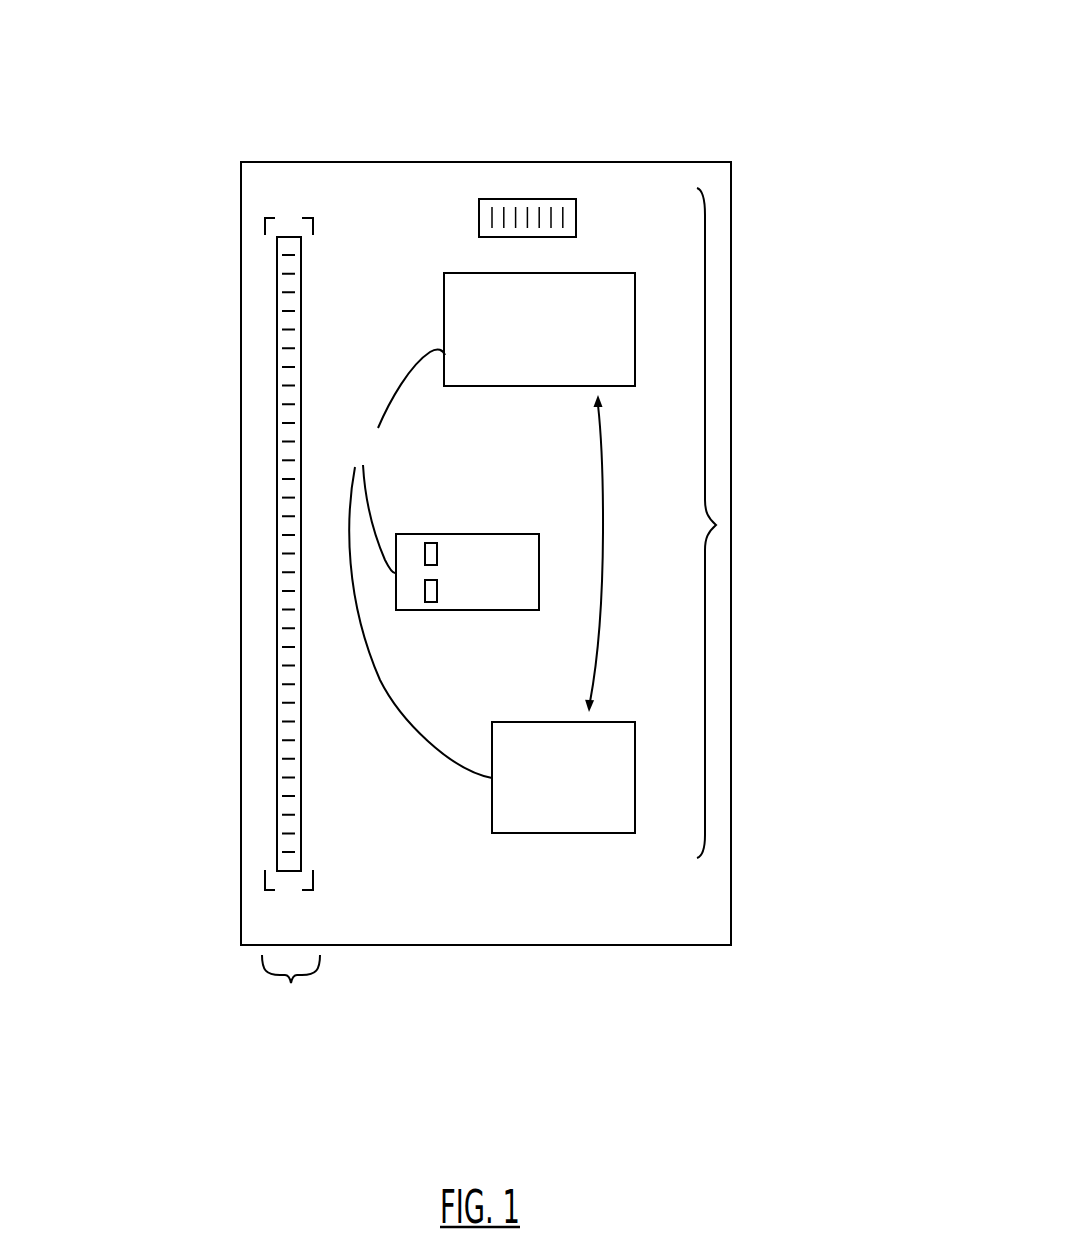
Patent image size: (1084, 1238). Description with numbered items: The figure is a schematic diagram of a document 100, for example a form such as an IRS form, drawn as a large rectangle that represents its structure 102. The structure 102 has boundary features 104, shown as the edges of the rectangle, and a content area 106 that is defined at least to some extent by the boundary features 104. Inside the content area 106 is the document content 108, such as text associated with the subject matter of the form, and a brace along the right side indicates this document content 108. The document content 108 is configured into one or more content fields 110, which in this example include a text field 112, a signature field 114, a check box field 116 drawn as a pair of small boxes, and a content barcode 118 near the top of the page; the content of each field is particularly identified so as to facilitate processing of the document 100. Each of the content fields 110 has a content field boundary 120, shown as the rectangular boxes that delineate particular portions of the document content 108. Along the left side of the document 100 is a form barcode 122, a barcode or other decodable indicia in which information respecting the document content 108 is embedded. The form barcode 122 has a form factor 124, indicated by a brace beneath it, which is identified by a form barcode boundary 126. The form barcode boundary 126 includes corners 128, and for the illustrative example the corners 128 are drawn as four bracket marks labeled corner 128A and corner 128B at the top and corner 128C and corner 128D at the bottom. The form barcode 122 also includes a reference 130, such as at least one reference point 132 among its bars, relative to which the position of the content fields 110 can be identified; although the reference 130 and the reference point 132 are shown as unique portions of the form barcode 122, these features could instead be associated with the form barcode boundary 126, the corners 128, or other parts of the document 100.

The document 100 is at (780, 64).
The structure 102 is at (742, 283).
The boundary features 104 is at (732, 423).
The content area 106 is at (648, 190).
The document content 108 is at (716, 525).
The content fields 110 is at (558, 562).
The text field 112 is at (645, 336).
The signature field 114 is at (536, 842).
The check box field 116 is at (420, 622).
The content barcode 118 is at (531, 198).
The content field boundary 120 is at (419, 563).
The form barcode 122 is at (239, 554).
The form factor 124 is at (291, 989).
The form barcode boundary 126 is at (277, 748).
The corners 128 is at (275, 557).
The corner 128A is at (265, 228).
The corner 128B is at (315, 226).
The corner 128C is at (265, 883).
The corner 128D is at (312, 885).
The reference 130 is at (270, 470).
The reference point 132 is at (284, 495).